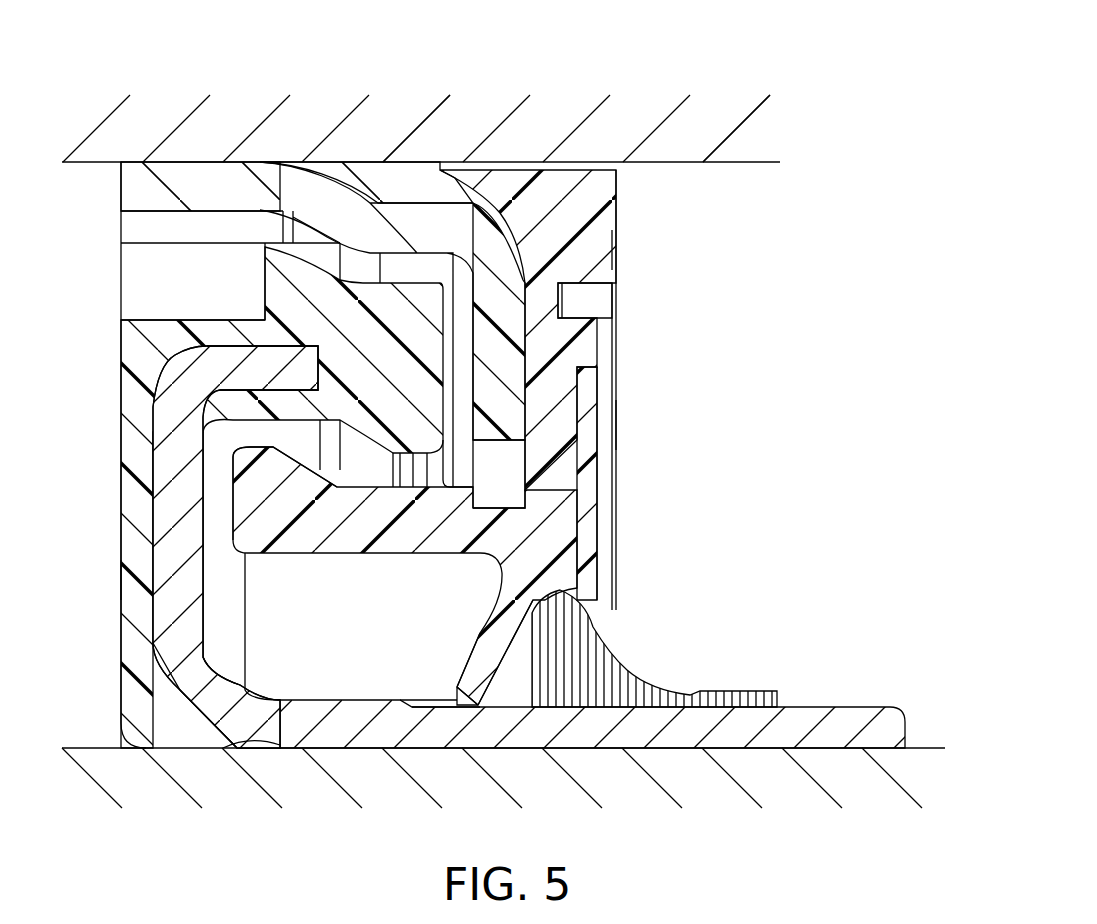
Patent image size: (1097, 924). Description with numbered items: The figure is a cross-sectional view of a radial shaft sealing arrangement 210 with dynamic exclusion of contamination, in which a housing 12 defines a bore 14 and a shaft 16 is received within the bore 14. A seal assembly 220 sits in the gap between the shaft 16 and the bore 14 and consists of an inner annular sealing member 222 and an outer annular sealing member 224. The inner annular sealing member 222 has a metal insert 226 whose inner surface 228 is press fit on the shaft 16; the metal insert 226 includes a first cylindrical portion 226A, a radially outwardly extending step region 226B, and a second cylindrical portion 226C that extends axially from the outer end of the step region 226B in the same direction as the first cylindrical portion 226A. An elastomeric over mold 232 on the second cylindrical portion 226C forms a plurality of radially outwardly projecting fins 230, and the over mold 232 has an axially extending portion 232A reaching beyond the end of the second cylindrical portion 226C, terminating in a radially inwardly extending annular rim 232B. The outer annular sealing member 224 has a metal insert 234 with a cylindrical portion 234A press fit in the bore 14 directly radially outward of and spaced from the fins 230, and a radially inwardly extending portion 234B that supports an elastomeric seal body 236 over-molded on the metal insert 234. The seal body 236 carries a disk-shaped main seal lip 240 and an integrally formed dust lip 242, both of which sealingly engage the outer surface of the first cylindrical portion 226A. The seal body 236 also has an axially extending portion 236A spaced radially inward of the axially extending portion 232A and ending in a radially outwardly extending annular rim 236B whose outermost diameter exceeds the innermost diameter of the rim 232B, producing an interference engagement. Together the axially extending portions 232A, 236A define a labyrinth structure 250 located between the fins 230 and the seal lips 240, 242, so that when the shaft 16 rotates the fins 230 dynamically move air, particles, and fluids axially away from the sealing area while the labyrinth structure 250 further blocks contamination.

The housing 12 is at (368, 118).
The bore 14 is at (720, 162).
The shaft 16 is at (905, 748).
The sealing arrangement 210 is at (795, 102).
The seal assembly 220 is at (745, 432).
The inner annular sealing member 222 is at (118, 575).
The outer annular sealing member 224 is at (653, 265).
The metal insert 226 is at (262, 682).
The first cylindrical portion 226A is at (810, 718).
The radially outwardly extending step region 226B is at (180, 603).
The second cylindrical portion 226C is at (230, 368).
The inner surface 228 is at (445, 748).
The radially outwardly projecting fins 230 is at (148, 272).
The elastomeric over mold 232 is at (132, 378).
The axially extending portion 232A is at (390, 295).
The radially inwardly extending annular rim 232B is at (400, 458).
The metal insert 234 is at (522, 228).
The cylindrical portion 234A is at (205, 178).
The radially inwardly extending portion 234B is at (560, 292).
The seal body 236 is at (577, 447).
The axially extending portion 236A is at (355, 532).
The radially outwardly extending annular rim 236B is at (255, 447).
The main seal lip 240 is at (620, 660).
The dust lip 242 is at (473, 670).
The labyrinth structure 250 is at (215, 468).